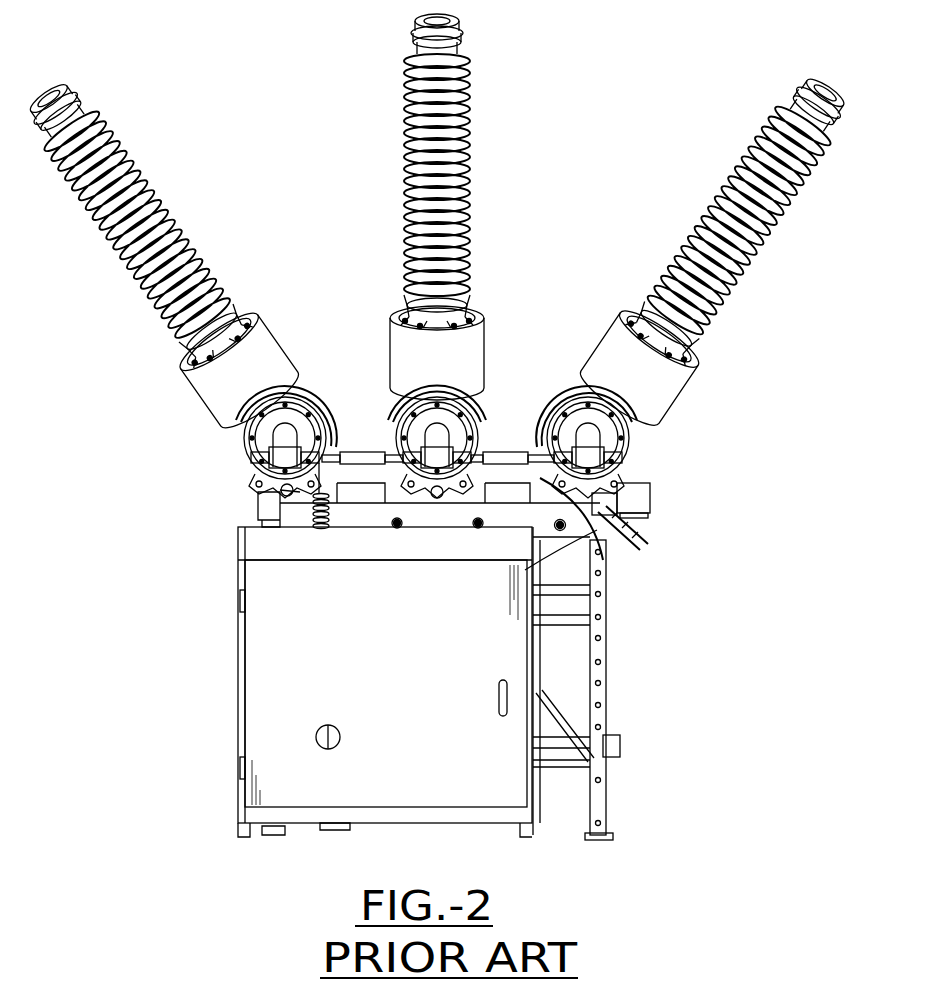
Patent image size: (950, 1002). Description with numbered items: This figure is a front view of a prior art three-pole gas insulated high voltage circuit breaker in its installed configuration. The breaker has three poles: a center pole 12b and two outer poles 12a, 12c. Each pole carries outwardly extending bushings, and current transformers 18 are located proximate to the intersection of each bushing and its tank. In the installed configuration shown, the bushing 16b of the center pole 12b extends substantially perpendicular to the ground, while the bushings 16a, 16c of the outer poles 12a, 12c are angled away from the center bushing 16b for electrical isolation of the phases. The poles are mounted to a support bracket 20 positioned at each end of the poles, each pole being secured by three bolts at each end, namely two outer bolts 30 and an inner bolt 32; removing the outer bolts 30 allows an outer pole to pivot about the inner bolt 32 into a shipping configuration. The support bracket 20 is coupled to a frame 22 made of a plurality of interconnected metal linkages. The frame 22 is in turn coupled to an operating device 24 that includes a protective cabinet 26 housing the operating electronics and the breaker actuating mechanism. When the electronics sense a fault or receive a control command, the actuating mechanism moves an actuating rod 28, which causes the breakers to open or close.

The outer pole 12a is at (177, 286).
The center pole 12b is at (482, 256).
The outer pole 12c is at (696, 283).
The bushing 16a is at (108, 125).
The bushing 16b is at (466, 105).
The bushing 16c is at (724, 185).
The current transformer 18 is at (258, 390).
The support bracket 20 is at (595, 592).
The frame 22 is at (615, 704).
The operating device 24 is at (232, 686).
The protective cabinet 26 is at (430, 714).
The actuating rod 28 is at (330, 510).
The outer bolt 30 is at (282, 488).
The inner bolt 32 is at (327, 455).